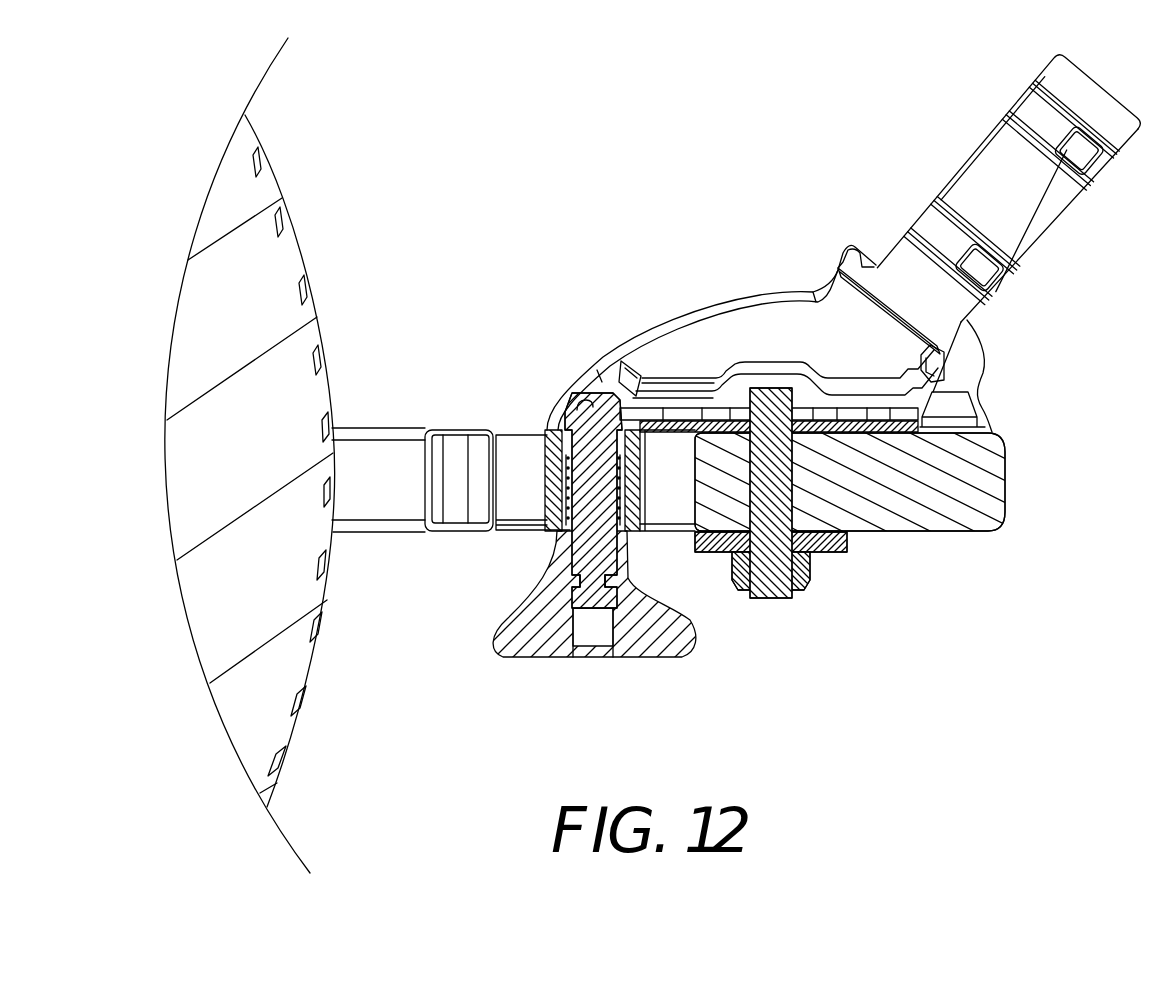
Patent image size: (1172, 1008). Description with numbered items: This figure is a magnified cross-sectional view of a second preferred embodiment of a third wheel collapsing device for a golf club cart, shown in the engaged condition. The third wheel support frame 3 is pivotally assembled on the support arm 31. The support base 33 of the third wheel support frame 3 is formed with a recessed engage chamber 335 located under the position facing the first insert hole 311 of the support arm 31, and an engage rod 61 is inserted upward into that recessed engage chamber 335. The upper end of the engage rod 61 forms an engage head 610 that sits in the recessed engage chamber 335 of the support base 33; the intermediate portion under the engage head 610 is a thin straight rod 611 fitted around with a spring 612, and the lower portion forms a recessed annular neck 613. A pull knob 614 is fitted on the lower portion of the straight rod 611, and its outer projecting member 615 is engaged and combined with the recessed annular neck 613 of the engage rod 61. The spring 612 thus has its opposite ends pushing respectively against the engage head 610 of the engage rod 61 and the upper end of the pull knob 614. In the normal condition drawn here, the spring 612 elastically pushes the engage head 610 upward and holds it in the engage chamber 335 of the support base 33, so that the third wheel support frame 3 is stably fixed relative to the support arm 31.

The third wheel support frame 3 is at (1077, 300).
The support arm 31 is at (512, 430).
The first insert hole 311 is at (557, 428).
The support base 33 is at (777, 300).
The recessed engage chamber 335 is at (557, 387).
The engage rod 61 is at (597, 553).
The engage head 610 is at (641, 378).
The thin straight rod 611 is at (560, 530).
The spring 612 is at (572, 462).
The recessed annular neck 613 is at (572, 595).
The pull knob 614 is at (628, 635).
The outer projecting member 615 is at (610, 578).